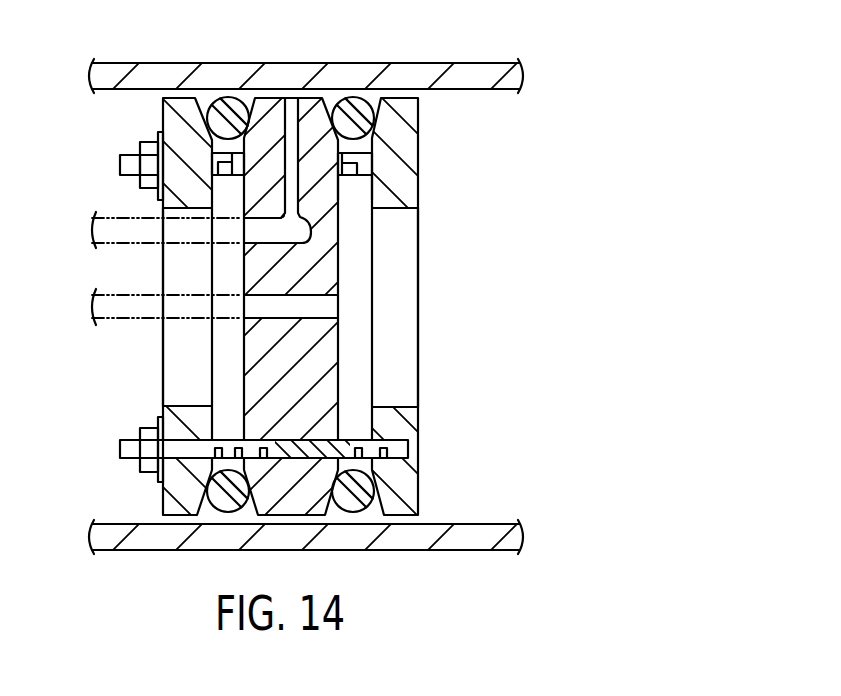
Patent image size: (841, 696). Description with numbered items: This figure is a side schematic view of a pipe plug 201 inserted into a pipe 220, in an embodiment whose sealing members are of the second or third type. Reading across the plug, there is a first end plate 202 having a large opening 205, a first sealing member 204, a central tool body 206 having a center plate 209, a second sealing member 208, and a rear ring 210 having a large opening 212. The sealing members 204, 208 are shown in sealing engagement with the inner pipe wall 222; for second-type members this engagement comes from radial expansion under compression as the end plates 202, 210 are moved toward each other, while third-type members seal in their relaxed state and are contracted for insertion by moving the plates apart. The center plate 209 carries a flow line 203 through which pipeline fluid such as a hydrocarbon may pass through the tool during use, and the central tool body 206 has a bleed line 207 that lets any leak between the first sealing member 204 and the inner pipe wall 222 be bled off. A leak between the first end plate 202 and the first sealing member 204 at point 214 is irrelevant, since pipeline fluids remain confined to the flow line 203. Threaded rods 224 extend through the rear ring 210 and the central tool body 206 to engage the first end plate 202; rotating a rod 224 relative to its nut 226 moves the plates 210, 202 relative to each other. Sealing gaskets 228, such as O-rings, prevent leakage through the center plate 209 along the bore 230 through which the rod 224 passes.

The pipe plug 201 is at (450, 172).
The first end plate 202 is at (418, 415).
The flow line 203 is at (350, 302).
The first sealing member 204 is at (342, 100).
The large opening 205 is at (415, 285).
The central tool body 206 is at (275, 102).
The bleed line 207 is at (292, 100).
The second sealing member 208 is at (220, 103).
The center plate 209 is at (338, 368).
The rear ring 210 is at (163, 113).
The large opening 212 is at (208, 282).
The point 214 is at (376, 97).
The pipe 220 is at (486, 55).
The inner pipe wall 222 is at (460, 90).
The threaded rod 224 is at (120, 162).
The nut 226 is at (140, 182).
The sealing gasket 228 is at (327, 438).
The bore 230 is at (240, 438).